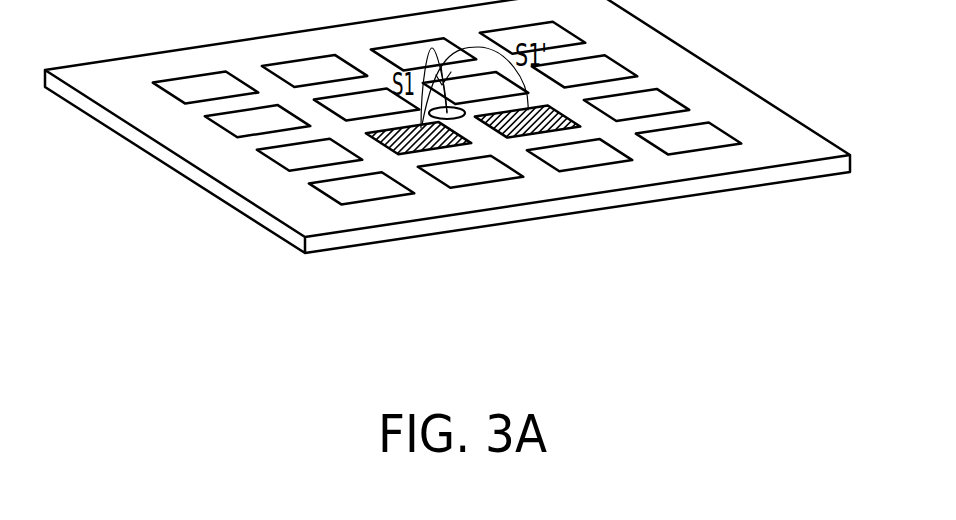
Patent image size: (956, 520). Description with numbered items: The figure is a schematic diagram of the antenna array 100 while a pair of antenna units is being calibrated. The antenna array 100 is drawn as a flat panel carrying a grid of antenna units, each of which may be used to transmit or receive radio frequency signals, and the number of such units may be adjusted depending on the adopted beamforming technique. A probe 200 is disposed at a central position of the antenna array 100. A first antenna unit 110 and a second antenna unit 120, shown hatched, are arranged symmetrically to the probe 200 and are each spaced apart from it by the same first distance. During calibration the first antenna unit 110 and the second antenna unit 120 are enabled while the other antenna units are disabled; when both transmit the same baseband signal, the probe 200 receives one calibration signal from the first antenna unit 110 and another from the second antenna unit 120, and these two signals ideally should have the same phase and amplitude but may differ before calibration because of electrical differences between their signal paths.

The antenna array 100 is at (837, 177).
The first antenna unit 110 is at (448, 150).
The second antenna unit 120 is at (573, 127).
The probe 200 is at (465, 115).